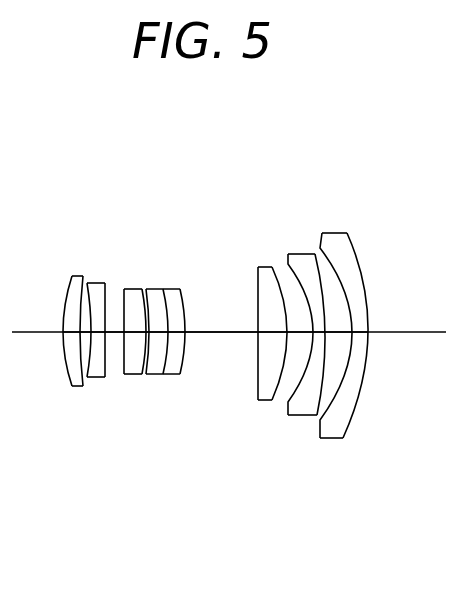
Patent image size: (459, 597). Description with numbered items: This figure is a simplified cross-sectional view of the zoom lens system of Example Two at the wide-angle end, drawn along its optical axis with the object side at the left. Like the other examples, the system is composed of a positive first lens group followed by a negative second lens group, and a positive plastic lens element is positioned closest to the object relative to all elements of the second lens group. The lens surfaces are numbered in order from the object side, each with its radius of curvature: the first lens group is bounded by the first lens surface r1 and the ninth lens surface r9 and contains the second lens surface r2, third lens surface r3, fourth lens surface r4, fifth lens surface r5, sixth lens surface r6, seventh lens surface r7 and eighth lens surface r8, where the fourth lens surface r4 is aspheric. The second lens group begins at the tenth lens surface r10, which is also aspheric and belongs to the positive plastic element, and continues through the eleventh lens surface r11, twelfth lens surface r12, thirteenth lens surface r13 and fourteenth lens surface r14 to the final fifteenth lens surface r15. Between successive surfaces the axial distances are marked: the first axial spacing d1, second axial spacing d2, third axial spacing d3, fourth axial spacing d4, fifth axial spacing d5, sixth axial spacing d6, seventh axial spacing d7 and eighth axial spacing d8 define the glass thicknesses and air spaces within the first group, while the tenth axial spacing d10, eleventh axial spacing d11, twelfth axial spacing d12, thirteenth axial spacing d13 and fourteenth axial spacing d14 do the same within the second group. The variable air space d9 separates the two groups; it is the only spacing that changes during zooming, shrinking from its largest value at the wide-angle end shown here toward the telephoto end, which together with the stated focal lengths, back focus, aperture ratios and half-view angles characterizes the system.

The first lens surface r1 is at (52, 241).
The second lens surface r2 is at (68, 259).
The third lens surface r3 is at (87, 237).
The fourth lens surface r4 is at (111, 255).
The fifth lens surface r5 is at (133, 236).
The sixth lens surface r6 is at (155, 254).
The seventh lens surface r7 is at (168, 236).
The eighth lens surface r8 is at (188, 254).
The ninth lens surface r9 is at (208, 236).
The tenth lens surface r10 is at (254, 267).
The eleventh lens surface r11 is at (275, 249).
The twelfth lens surface r12 is at (299, 275).
The thirteenth lens surface r13 is at (322, 257).
The fourteenth lens surface r14 is at (341, 287).
The fifteenth lens surface r15 is at (364, 269).
The first axial spacing d1 is at (60, 433).
The second axial spacing d2 is at (76, 450).
The third axial spacing d3 is at (98, 433).
The fourth axial spacing d4 is at (120, 450).
The fifth axial spacing d5 is at (140, 433).
The sixth axial spacing d6 is at (163, 450).
The seventh axial spacing d7 is at (175, 433).
The eighth axial spacing d8 is at (196, 450).
The variable air space d9 is at (221, 433).
The tenth axial spacing d10 is at (277, 450).
The eleventh axial spacing d11 is at (302, 433).
The twelfth axial spacing d12 is at (324, 450).
The thirteenth axial spacing d13 is at (347, 433).
The fourteenth axial spacing d14 is at (371, 450).